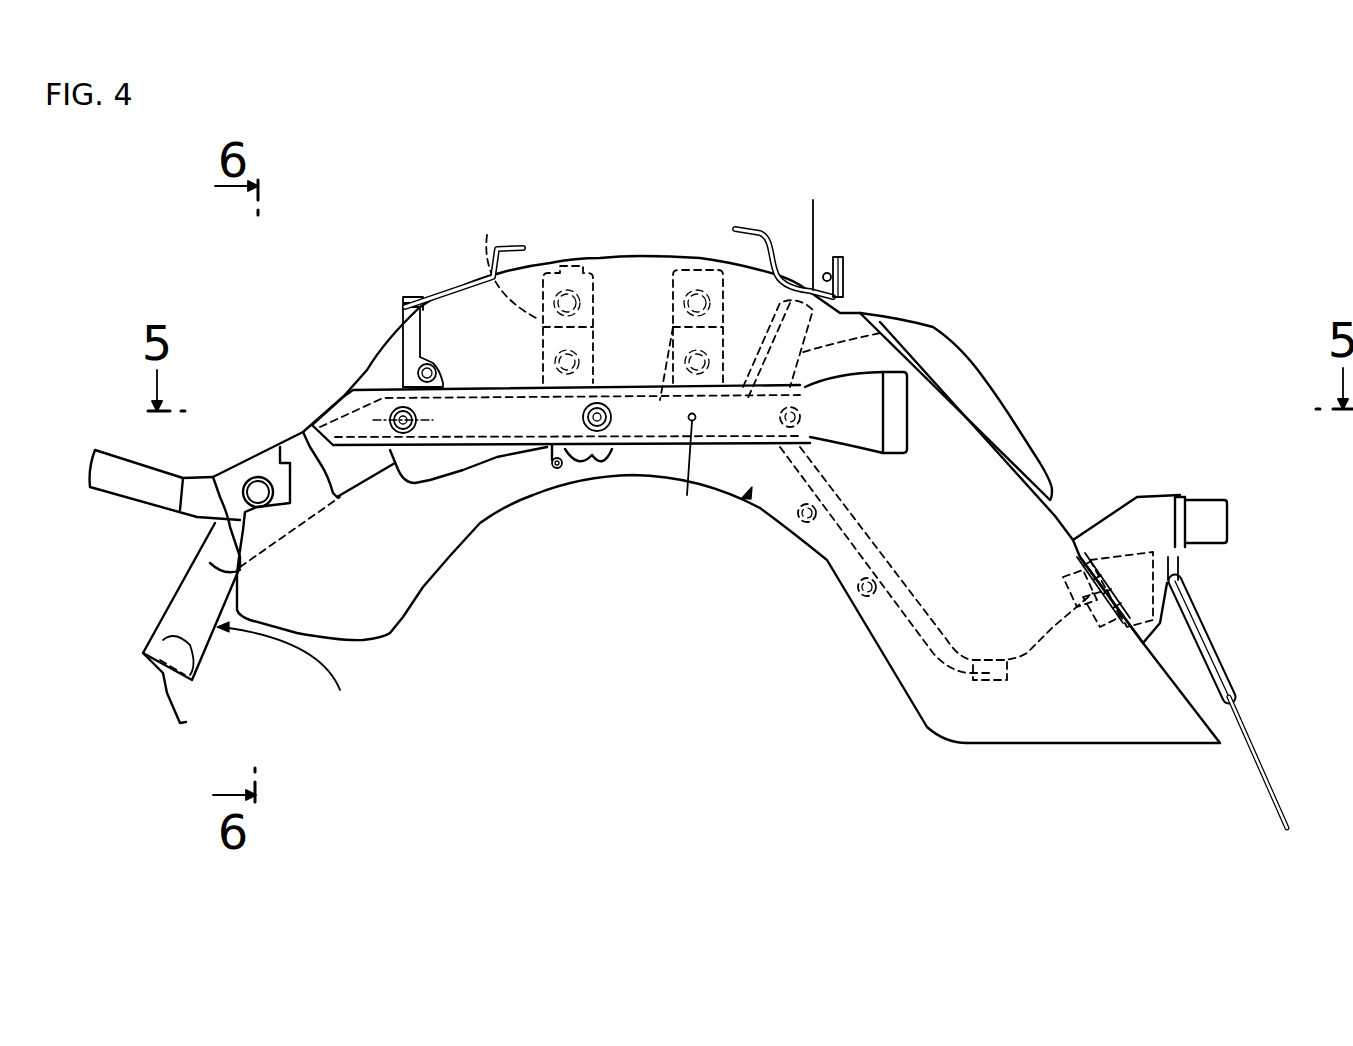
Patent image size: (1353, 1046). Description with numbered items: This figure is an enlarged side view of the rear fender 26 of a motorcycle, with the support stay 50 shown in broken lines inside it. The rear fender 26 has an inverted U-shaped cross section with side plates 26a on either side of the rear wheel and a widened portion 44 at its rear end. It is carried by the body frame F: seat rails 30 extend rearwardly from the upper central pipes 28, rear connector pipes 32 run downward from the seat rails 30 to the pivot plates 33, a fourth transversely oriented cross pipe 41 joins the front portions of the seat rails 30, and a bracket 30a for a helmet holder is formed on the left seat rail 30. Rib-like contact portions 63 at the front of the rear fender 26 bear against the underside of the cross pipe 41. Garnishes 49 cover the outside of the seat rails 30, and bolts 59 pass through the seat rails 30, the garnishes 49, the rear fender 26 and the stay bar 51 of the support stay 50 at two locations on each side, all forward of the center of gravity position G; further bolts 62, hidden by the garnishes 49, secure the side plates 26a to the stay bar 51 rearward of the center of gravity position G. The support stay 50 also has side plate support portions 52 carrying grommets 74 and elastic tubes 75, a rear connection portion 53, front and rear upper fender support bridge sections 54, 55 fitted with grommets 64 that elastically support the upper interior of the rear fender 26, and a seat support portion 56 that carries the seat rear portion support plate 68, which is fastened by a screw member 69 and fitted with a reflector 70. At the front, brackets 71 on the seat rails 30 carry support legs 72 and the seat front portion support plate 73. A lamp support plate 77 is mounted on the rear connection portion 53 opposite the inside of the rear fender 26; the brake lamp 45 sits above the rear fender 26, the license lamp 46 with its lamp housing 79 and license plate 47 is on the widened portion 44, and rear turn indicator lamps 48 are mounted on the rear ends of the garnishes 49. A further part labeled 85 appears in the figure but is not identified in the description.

The rear fender 26 is at (640, 257).
The side plates 26a is at (443, 540).
The upper central pipes 28 is at (147, 493).
The seat rails 30 is at (280, 417).
The bracket 30a is at (607, 460).
The rear connector pipes 32 is at (180, 620).
The pivot plates 33 is at (190, 693).
The fourth transversely oriented cross pipe 41 is at (258, 477).
The widened portion 44 is at (1048, 720).
The brake lamp 45 is at (930, 320).
The license lamp 46 is at (1155, 498).
The license plate 47 is at (1254, 753).
The rear turn indicator lamps 48 is at (857, 433).
The garnishes 49 is at (497, 403).
The support stay 50 is at (733, 507).
The stay bar 51 is at (628, 403).
The side plate support portion 52 is at (800, 519).
The rear connection portion 53 is at (1047, 660).
The front upper fender support bridge section 54 is at (502, 256).
The rear upper fender support bridge section 55 is at (666, 417).
The seat support portion 56 is at (880, 333).
The bolts 59 is at (390, 445).
The bolts 62 is at (801, 413).
The contact portions 63 is at (207, 525).
The grommets 64 is at (573, 267).
The seat rear portion support plate 68 is at (760, 233).
The screw member 69 is at (812, 227).
The reflector 70 is at (847, 269).
The brackets 71 is at (410, 377).
The support legs 72 is at (400, 317).
The seat front portion support plate 73 is at (463, 283).
The grommets 74 is at (797, 512).
The elastic tubes 75 is at (993, 680).
The lamp support plate 77 is at (1090, 573).
The lamp housing 79 is at (1118, 500).
The hidden clip 85 is at (1052, 615).
The body frame F is at (283, 674).
The center of gravity position G is at (680, 475).